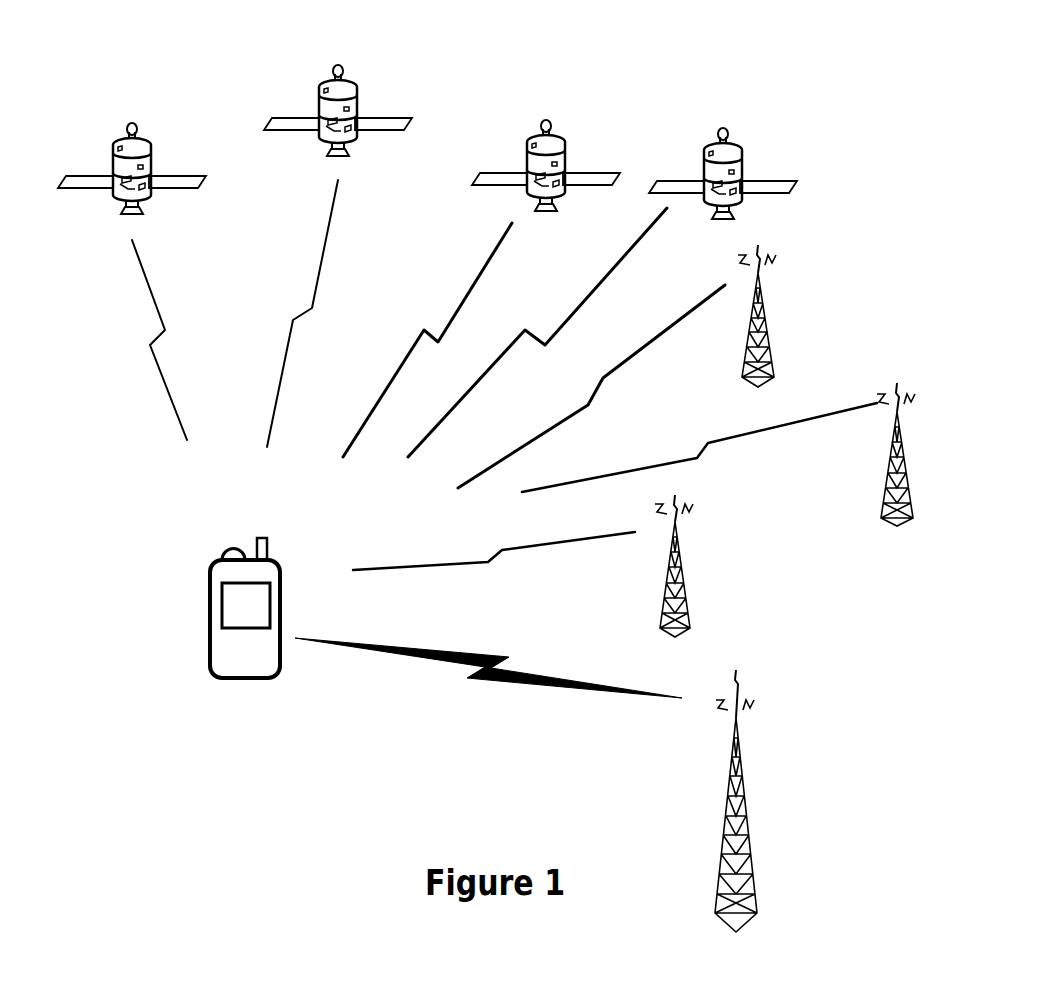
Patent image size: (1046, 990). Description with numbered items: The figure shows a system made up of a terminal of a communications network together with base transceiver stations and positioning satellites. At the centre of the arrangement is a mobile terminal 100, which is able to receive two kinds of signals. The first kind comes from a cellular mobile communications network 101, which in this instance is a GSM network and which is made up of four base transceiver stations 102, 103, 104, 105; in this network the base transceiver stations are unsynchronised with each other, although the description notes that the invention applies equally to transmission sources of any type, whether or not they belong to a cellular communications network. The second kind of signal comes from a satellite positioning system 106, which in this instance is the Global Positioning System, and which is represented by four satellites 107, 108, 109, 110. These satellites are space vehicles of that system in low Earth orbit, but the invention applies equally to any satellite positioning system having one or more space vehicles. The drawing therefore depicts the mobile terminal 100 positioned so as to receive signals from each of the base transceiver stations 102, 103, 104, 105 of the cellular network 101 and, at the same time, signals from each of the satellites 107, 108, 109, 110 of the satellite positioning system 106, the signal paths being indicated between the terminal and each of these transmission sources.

The mobile terminal 100 is at (245, 636).
The cellular mobile communications network 101 is at (834, 573).
The base transceiver station 102 is at (766, 801).
The base transceiver station 103 is at (705, 566).
The base transceiver station 104 is at (858, 454).
The base transceiver station 105 is at (799, 316).
The satellite positioning system 106 is at (500, 96).
The satellite 107 is at (136, 160).
The satellite 108 is at (343, 96).
The satellite 109 is at (552, 161).
The satellite 110 is at (729, 167).